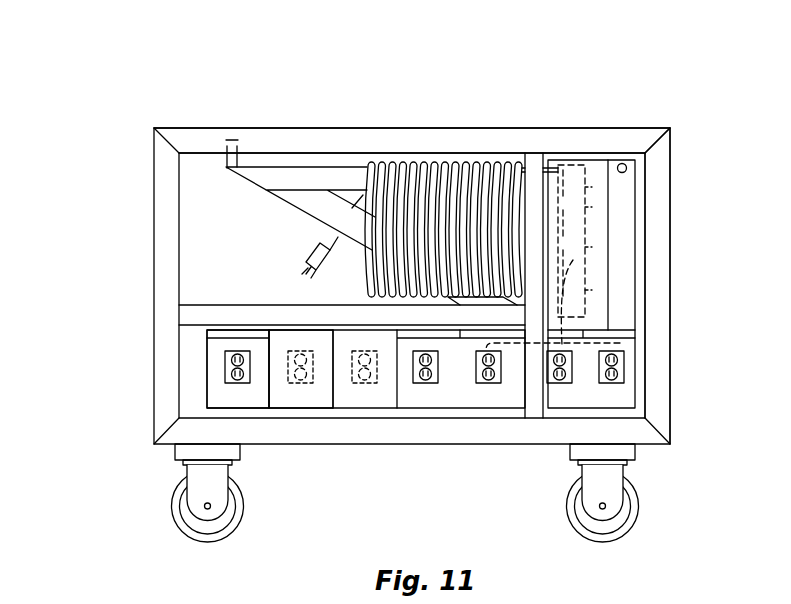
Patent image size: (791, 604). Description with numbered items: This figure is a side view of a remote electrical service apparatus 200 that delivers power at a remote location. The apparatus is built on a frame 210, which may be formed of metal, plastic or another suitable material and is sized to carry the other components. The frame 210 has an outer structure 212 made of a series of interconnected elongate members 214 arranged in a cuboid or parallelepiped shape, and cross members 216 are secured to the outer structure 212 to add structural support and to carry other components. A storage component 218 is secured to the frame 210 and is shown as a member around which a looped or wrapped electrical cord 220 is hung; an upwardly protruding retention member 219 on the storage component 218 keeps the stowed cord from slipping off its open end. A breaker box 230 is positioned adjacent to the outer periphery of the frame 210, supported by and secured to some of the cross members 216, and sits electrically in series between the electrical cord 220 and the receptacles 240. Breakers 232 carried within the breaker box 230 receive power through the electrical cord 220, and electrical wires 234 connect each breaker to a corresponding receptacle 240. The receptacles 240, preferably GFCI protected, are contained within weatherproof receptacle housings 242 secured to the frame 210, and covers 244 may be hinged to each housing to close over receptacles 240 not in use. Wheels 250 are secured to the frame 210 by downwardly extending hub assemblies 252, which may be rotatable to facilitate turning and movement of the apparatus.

The remote electrical service apparatus 200 is at (110, 68).
The frame 210 is at (142, 138).
The outer structure 212 is at (661, 151).
The elongate members 214 is at (626, 141).
The cross members 216 is at (193, 315).
The storage component 218 is at (320, 178).
The retention member 219 is at (235, 160).
The electrical cord 220 is at (465, 165).
The breaker box 230 is at (586, 152).
The breakers 232 is at (590, 268).
The electrical wires 234 is at (593, 317).
The receptacles 240 is at (370, 380).
The weatherproof receptacle housings 242 is at (197, 368).
The covers 244 is at (243, 333).
The wheels 250 is at (636, 505).
The hub assemblies 252 is at (643, 464).